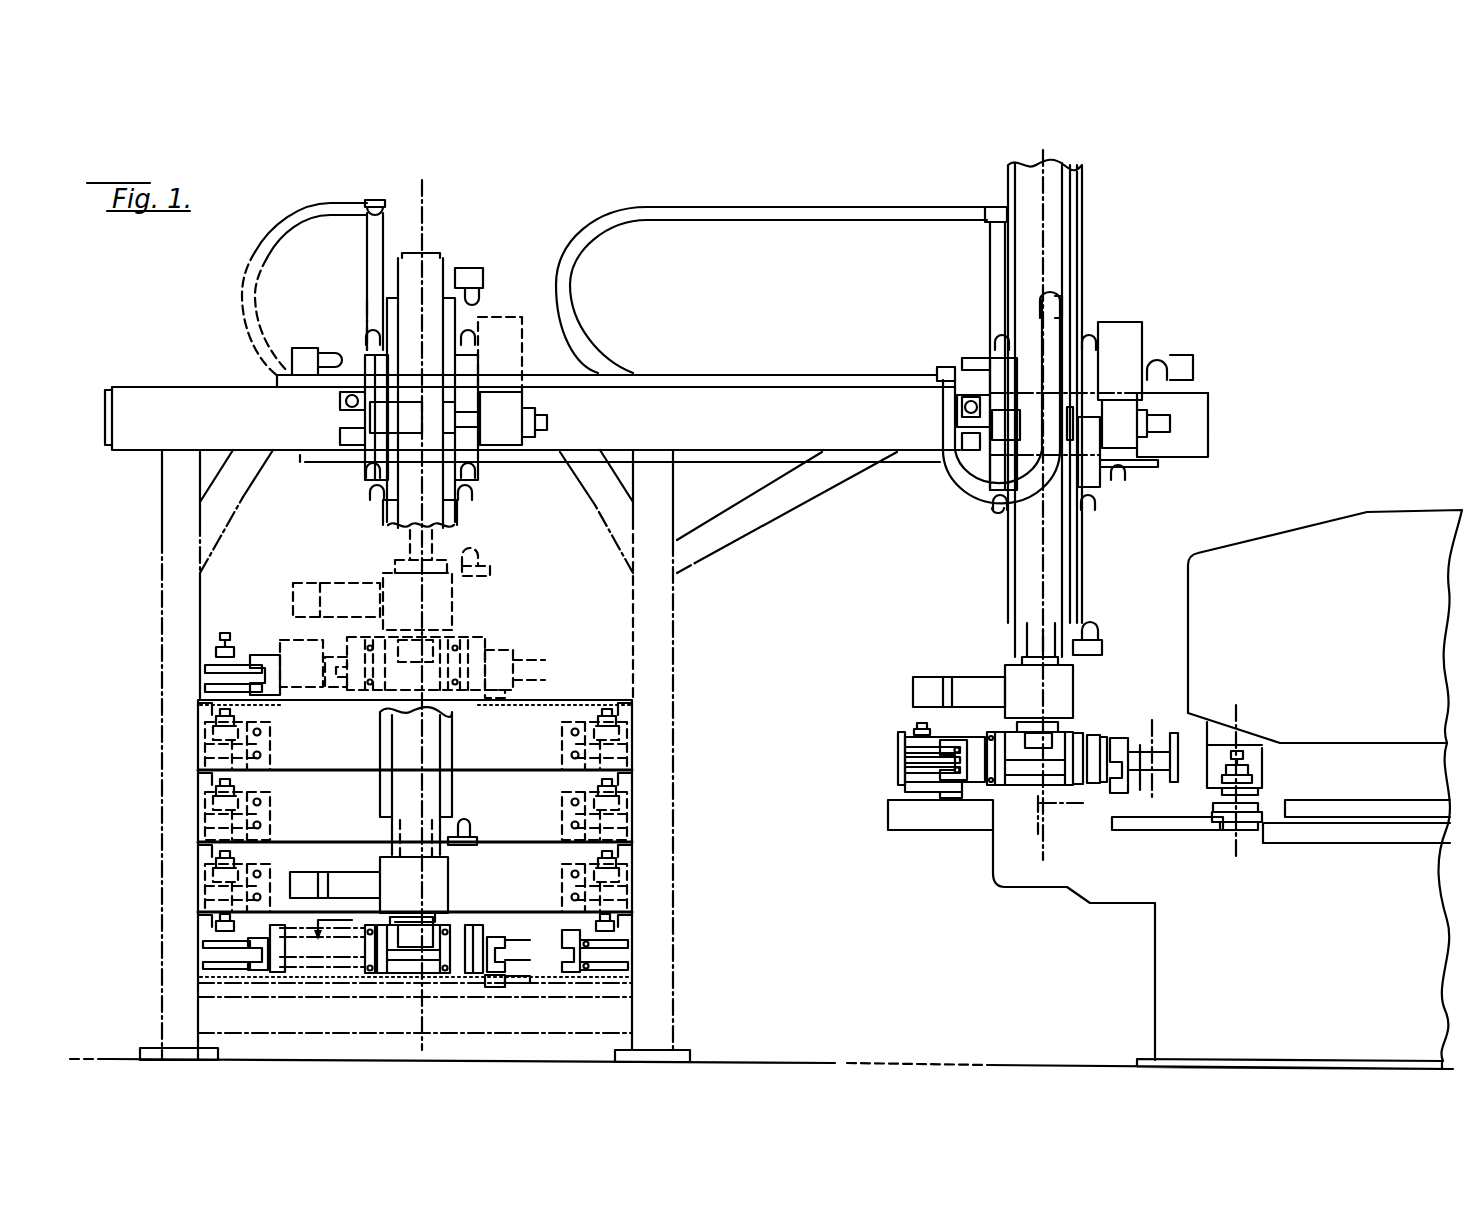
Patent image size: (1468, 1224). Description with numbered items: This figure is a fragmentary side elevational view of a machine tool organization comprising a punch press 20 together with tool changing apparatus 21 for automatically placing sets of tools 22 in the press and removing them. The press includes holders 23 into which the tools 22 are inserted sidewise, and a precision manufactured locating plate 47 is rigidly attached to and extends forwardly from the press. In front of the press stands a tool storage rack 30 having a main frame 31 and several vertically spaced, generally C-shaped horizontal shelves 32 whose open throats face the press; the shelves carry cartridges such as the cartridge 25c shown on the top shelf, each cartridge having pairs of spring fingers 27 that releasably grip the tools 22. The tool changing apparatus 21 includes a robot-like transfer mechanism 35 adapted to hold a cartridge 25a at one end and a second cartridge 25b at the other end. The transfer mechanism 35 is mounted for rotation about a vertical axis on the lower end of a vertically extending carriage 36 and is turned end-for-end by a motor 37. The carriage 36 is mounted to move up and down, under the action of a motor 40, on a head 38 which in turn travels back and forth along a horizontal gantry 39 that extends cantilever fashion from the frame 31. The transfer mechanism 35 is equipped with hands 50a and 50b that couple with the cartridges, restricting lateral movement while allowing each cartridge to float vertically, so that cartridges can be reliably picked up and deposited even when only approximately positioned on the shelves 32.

The punch press 20 is at (1358, 532).
The tool changing apparatus 21 is at (1098, 304).
The tools 22 is at (206, 691).
The holders 23 is at (1212, 755).
The cartridge 25a is at (250, 928).
The cartridge 25b is at (505, 650).
The cartridge 25c is at (264, 650).
The spring fingers 27 is at (540, 690).
The tool storage rack 30 is at (616, 700).
The main frame 31 is at (178, 797).
The shelves 32 is at (570, 706).
The transfer mechanism 35 is at (460, 636).
The carriage 36 is at (1065, 556).
The motor 37 is at (978, 687).
The head 38 is at (996, 364).
The gantry 39 is at (735, 393).
The motor 40 is at (1142, 344).
The locating plate 47 is at (1128, 826).
The hand 50a is at (275, 685).
The hand 50b is at (488, 694).